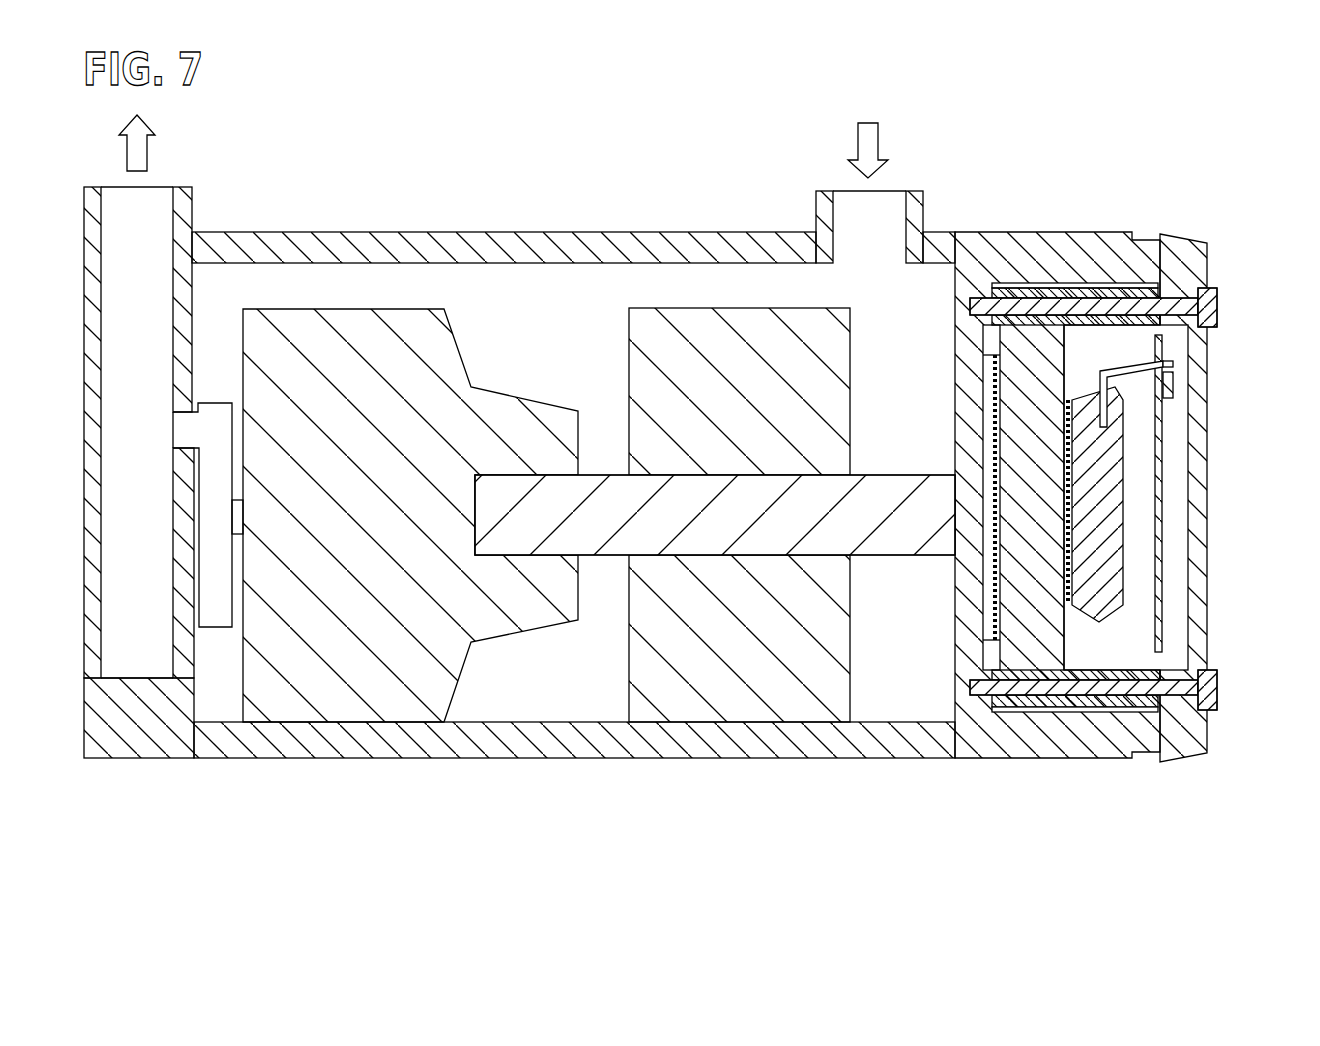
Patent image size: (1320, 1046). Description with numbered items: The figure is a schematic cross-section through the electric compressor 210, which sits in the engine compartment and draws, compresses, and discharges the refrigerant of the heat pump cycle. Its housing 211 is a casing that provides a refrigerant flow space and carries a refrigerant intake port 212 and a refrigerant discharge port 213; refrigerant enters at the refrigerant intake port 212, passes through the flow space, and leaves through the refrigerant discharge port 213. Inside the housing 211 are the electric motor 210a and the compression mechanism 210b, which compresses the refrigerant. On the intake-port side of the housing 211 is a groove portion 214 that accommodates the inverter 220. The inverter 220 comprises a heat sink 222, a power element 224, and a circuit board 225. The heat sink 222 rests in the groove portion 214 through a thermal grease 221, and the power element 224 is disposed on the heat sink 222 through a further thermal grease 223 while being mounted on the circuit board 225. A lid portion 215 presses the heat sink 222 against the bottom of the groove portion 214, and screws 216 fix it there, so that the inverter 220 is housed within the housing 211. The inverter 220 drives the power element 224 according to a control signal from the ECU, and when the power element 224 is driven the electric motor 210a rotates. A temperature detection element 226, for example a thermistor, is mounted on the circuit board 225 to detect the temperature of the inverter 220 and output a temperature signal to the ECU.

The electric compressor 210 is at (1057, 235).
The electric motor 210a is at (707, 308).
The compression mechanism 210b is at (325, 308).
The housing 211 is at (435, 258).
The refrigerant intake port 212 is at (902, 191).
The refrigerant discharge port 213 is at (167, 187).
The groove portion 214 is at (1100, 708).
The lid portion 215 is at (1198, 615).
The screws 216 is at (1217, 300).
The inverter 220 is at (1175, 571).
The thermal grease 221 is at (993, 604).
The heat sink 222 is at (1032, 643).
The thermal grease 223 is at (1064, 605).
The power element 224 is at (1100, 512).
The circuit board 225 is at (1158, 452).
The temperature detection element 226 is at (1173, 381).